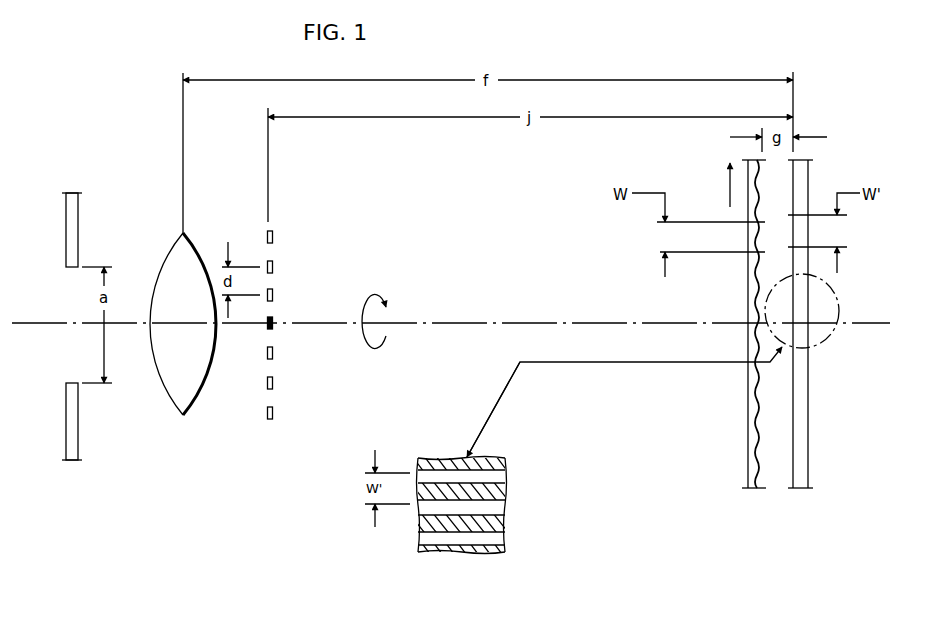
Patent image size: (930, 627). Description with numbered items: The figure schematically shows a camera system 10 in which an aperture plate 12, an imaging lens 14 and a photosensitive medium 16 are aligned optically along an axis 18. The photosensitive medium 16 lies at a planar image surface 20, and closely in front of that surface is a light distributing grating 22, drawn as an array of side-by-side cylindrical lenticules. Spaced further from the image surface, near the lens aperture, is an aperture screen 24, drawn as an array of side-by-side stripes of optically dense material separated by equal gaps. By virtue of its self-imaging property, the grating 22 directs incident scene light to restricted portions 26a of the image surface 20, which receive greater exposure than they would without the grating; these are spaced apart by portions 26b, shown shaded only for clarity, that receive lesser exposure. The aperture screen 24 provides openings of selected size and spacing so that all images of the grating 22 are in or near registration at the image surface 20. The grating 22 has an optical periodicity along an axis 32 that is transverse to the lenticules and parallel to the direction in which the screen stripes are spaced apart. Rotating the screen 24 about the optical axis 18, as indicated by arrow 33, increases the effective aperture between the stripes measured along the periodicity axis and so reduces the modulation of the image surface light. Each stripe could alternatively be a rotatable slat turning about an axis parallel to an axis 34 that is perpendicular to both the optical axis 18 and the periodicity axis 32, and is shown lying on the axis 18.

The camera system 10 is at (257, 432).
The aperture plate 12 is at (66, 219).
The imaging lens 14 is at (167, 258).
The photosensitive medium 16 is at (802, 182).
The axis 18 is at (43, 323).
The image surface 20 is at (790, 450).
The light distributing grating 22 is at (753, 428).
The aperture screen 24 is at (273, 237).
The highly exposed portions 26a is at (475, 503).
The lesser exposed portions 26b is at (500, 518).
The periodicity axis 32 is at (730, 186).
The rotation arrow 33 is at (368, 345).
The slat rotation axis 34 is at (272, 321).